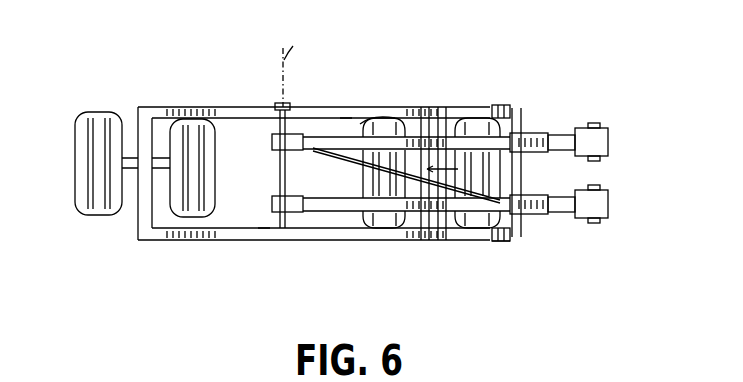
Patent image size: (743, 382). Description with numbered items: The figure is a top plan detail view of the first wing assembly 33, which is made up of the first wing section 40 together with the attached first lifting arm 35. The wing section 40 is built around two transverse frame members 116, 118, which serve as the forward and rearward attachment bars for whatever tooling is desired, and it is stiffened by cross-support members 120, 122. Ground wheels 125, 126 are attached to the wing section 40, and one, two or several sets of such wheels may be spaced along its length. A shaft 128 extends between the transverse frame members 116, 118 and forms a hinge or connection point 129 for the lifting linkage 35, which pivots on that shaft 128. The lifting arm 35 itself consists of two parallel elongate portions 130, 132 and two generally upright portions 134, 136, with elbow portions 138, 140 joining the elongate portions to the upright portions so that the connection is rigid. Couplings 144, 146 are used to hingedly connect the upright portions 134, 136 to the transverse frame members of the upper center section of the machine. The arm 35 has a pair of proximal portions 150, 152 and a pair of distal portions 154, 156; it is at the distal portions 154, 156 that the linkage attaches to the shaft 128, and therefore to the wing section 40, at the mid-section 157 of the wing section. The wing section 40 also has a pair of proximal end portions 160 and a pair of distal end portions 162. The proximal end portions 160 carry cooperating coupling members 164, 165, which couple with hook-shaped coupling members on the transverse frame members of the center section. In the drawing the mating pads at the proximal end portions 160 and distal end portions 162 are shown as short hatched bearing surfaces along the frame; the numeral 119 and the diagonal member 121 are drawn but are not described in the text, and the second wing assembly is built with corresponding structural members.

The first wing assembly 33 is at (421, 66).
The first lifting arm 35 is at (398, 118).
The first wing section 40 is at (236, 239).
The transverse frame member 116 is at (248, 107).
The transverse frame member 118 is at (420, 236).
The bearing pad 119 is at (447, 107).
The cross-support member 120 is at (140, 203).
The diagonal brace 121 is at (480, 168).
The cross-support member 122 is at (349, 179).
The ground wheel 125 is at (98, 112).
The ground wheel 126 is at (200, 118).
The shaft 128 is at (278, 168).
The hinge or connection point 129 is at (287, 106).
The elongate portion 130 is at (470, 116).
The elongate portion 132 is at (392, 214).
The upright portion 134 is at (566, 135).
The upright portion 136 is at (561, 213).
The elbow portion 138 is at (548, 133).
The elbow portion 140 is at (524, 215).
The coupling 144 is at (610, 134).
The coupling 146 is at (608, 207).
The proximal portion 150 is at (600, 127).
The proximal portion 152 is at (575, 216).
The distal portion 154 is at (330, 118).
The distal portion 156 is at (322, 205).
The mid-section 157 is at (345, 117).
The proximal end portion 160 is at (490, 106).
The distal end portion 162 is at (160, 107).
The cooperating coupling member 164 is at (512, 115).
The cooperating coupling member 165 is at (496, 244).